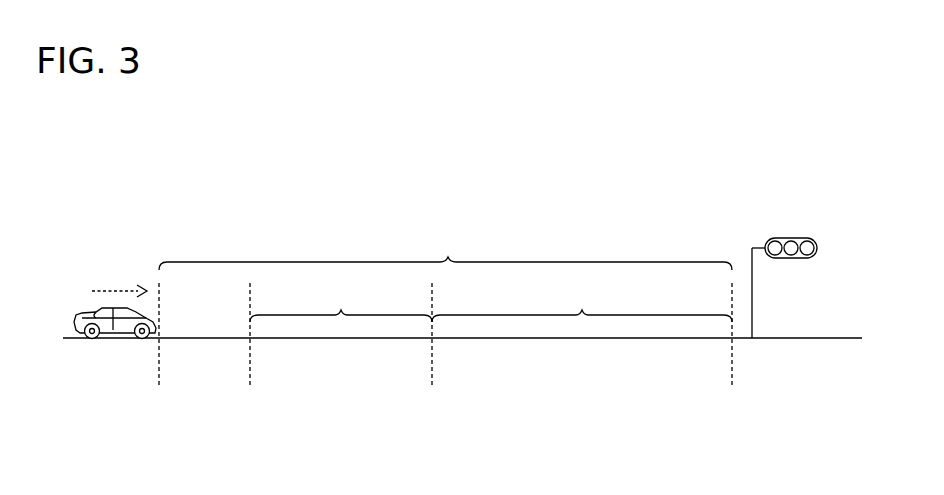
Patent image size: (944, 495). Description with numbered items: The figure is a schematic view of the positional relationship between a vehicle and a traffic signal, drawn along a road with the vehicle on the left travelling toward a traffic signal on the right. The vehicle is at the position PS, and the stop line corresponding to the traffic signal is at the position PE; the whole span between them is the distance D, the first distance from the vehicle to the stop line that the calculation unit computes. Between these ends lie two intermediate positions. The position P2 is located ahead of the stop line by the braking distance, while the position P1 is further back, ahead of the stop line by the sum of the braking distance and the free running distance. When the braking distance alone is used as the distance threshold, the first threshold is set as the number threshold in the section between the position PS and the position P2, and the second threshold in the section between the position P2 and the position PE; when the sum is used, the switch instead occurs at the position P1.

The position PS is at (160, 352).
The position P1 is at (251, 352).
The position P2 is at (433, 352).
The position PE is at (735, 352).
The distance D is at (445, 249).